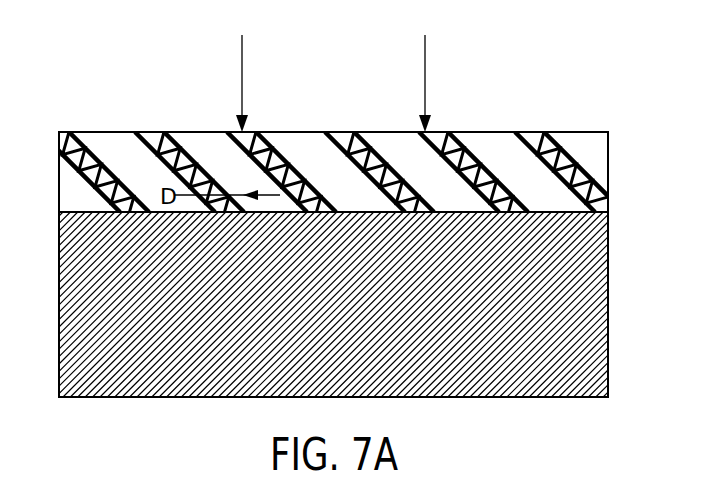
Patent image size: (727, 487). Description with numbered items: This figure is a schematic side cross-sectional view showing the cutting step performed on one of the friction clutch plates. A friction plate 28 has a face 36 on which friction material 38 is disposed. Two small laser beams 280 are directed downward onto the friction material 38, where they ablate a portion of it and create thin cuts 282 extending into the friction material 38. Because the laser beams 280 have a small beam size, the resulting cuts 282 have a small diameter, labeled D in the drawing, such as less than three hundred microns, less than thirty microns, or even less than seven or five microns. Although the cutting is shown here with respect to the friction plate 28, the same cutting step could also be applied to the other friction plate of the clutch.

The friction plate 28 is at (70, 242).
The face 36 is at (90, 157).
The friction material 38 is at (529, 118).
The laser beam 280 is at (243, 63).
The cut 282 is at (240, 168).